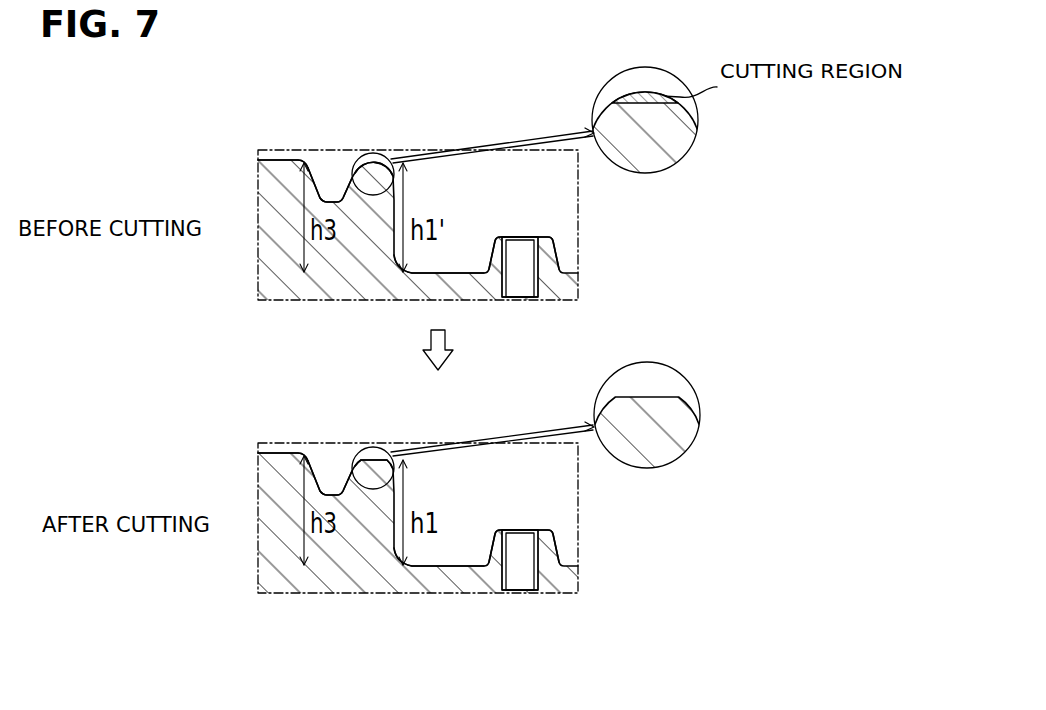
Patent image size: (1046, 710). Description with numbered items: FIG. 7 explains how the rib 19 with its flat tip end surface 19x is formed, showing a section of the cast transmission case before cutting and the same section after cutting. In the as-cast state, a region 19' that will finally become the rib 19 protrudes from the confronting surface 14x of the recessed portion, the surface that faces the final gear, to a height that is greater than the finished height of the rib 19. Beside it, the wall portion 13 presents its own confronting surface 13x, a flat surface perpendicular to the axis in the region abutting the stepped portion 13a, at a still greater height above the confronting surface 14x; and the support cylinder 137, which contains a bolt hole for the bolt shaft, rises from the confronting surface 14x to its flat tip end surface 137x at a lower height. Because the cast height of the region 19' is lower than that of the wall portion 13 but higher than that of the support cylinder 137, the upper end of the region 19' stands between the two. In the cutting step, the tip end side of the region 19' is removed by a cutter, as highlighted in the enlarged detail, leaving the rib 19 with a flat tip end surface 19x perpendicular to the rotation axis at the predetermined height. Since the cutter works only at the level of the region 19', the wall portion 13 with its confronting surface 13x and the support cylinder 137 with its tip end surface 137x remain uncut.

The wall portion 13 is at (258, 194).
The confronting surface 13x is at (275, 158).
The stepped portion 13a is at (322, 173).
The tip end surface 19x is at (383, 161).
The region formed into the rib 19' is at (526, 167).
The rib 19 is at (373, 503).
The confronting surface of the recessed portion 14x is at (463, 272).
The tip end surface of the support cylinder 137x is at (541, 237).
The support cylinder 137 is at (556, 255).